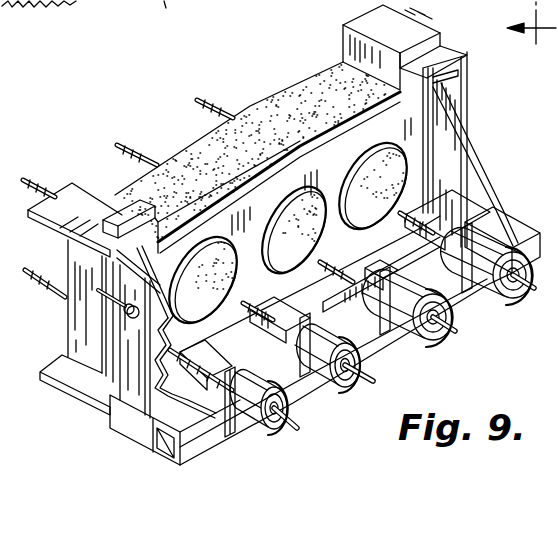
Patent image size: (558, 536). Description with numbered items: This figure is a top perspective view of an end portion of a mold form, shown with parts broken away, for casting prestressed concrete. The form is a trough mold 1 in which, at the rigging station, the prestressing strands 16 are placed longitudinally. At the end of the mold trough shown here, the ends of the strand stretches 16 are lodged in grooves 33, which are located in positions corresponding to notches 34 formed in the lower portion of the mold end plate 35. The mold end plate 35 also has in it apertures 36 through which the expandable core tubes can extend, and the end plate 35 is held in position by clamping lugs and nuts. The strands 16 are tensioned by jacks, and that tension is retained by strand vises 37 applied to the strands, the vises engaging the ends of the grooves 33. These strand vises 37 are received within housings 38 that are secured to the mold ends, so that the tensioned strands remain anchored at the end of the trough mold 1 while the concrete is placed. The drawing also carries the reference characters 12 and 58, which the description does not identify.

The trough mold 1 is at (429, 18).
The direction indicator 12 is at (532, 27).
The prestressing strands 16 is at (227, 124).
The grooves 33 is at (290, 343).
The notches 34 is at (246, 306).
The mold end plate 35 is at (313, 166).
The apertures 36 is at (218, 236).
The strand vises 37 is at (250, 430).
The housings 38 is at (447, 293).
The element 58 is at (178, 12).